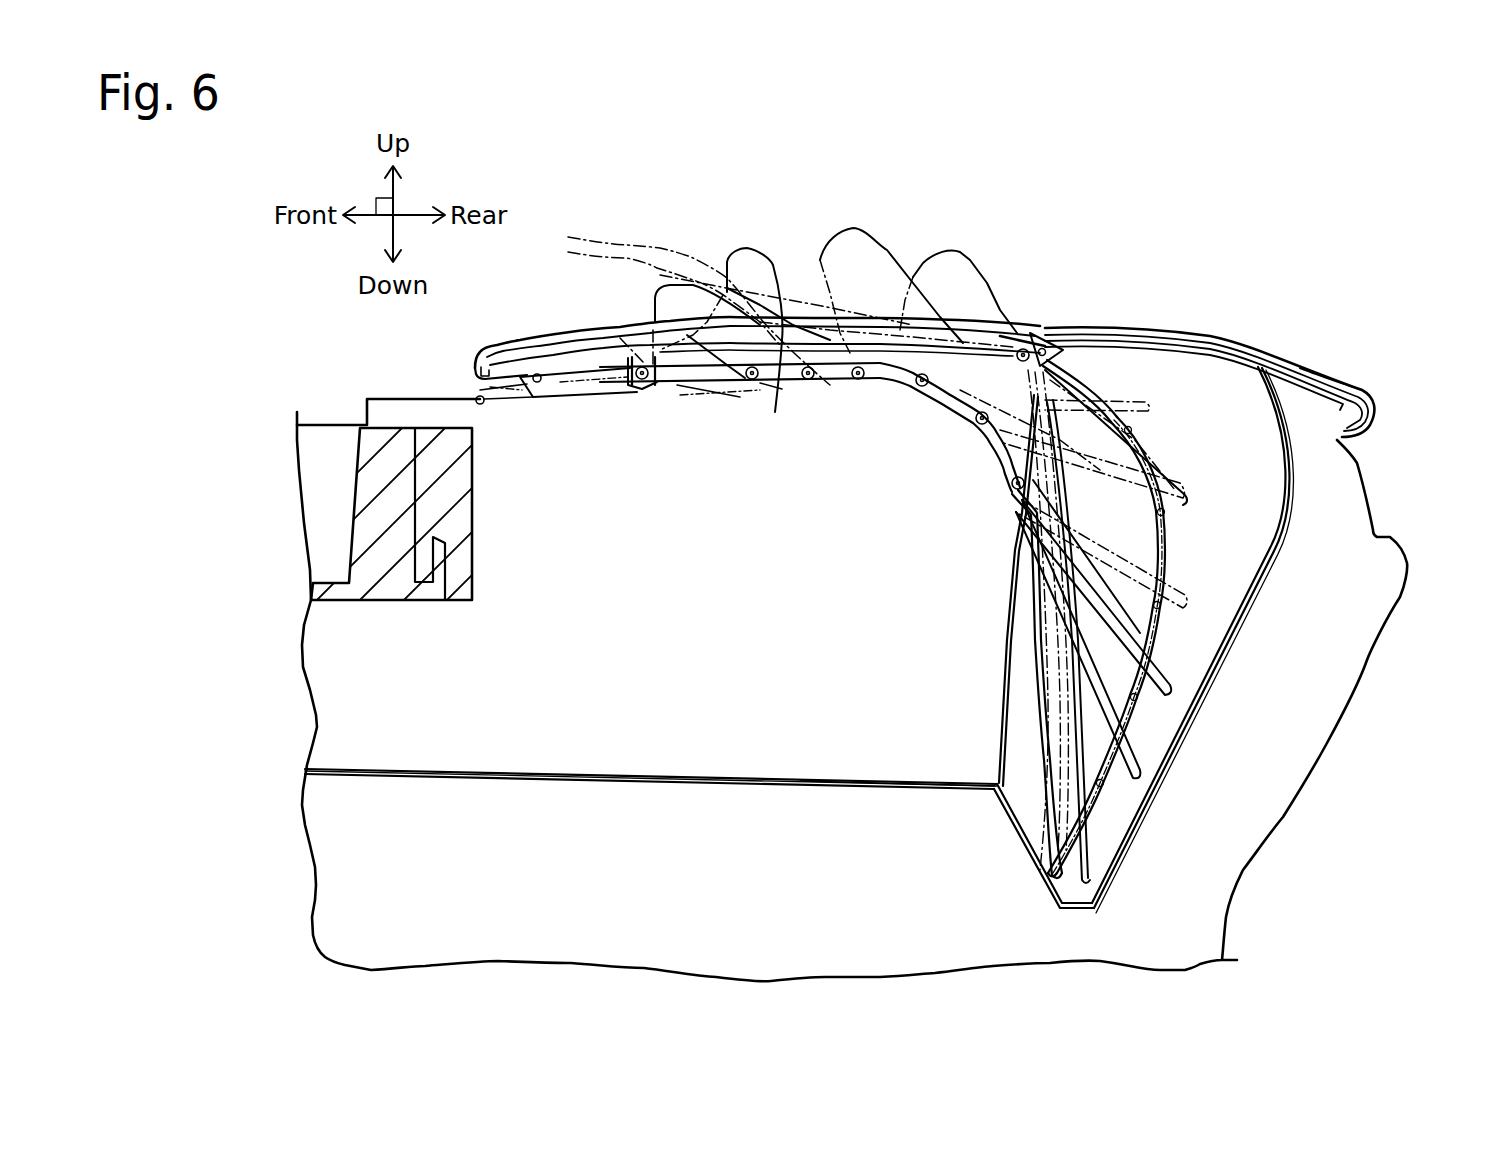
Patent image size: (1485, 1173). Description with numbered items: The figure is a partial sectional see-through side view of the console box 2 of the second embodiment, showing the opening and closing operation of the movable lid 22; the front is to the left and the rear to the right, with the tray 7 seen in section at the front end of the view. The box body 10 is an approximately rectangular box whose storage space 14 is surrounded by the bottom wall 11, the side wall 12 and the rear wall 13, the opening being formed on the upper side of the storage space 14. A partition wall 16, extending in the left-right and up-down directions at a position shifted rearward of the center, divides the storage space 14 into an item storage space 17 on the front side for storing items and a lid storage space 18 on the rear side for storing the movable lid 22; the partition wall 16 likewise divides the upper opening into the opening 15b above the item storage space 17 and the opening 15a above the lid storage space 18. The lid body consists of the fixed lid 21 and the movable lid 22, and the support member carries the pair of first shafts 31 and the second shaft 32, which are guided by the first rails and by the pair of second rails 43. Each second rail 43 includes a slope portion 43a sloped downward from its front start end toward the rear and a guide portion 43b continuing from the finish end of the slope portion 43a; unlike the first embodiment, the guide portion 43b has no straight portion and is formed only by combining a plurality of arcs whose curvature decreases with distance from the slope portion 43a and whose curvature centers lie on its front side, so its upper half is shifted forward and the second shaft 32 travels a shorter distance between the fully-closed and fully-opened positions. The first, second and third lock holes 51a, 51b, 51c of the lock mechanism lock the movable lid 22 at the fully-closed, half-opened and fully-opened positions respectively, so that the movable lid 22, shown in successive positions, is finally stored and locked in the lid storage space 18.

The console box 2 is at (1396, 340).
The tray 7 is at (333, 468).
The box body 10 is at (1325, 749).
The bottom wall 11 is at (562, 778).
The side wall 12 is at (644, 708).
The rear wall 13 is at (1207, 683).
The storage space 14 is at (947, 829).
The opening of the lid storage space 15a is at (1210, 367).
The opening of the item storage space 15b is at (771, 256).
The partition wall 16 is at (1003, 683).
The item storage space 17 is at (852, 741).
The lid storage space 18 is at (1033, 790).
The fixed lid 21 is at (1303, 360).
The movable lid 22 is at (617, 318).
The first shaft 31 is at (642, 392).
The second shaft 32 is at (1027, 318).
The second rail 43 is at (1122, 538).
The slope portion 43a is at (1063, 345).
The guide portion 43b is at (1150, 430).
The first lock hole 51a is at (652, 388).
The second lock hole 51b is at (872, 383).
The third lock hole 51c is at (1013, 488).